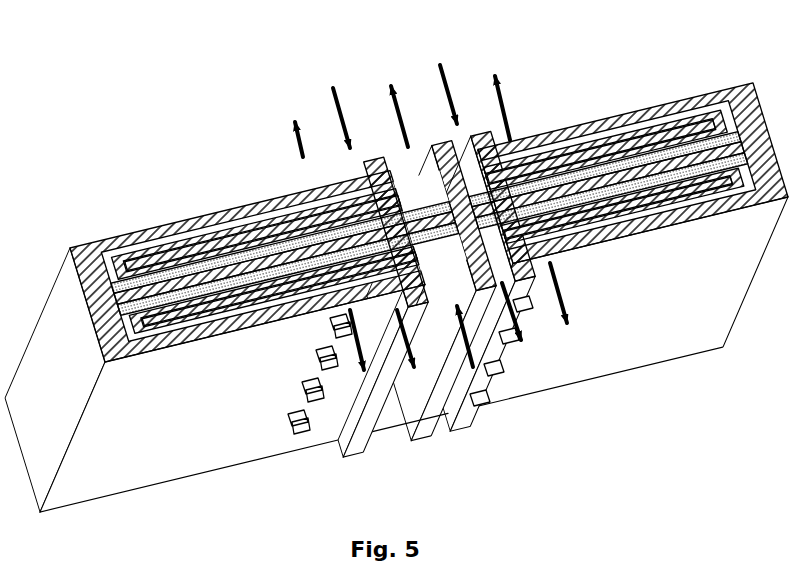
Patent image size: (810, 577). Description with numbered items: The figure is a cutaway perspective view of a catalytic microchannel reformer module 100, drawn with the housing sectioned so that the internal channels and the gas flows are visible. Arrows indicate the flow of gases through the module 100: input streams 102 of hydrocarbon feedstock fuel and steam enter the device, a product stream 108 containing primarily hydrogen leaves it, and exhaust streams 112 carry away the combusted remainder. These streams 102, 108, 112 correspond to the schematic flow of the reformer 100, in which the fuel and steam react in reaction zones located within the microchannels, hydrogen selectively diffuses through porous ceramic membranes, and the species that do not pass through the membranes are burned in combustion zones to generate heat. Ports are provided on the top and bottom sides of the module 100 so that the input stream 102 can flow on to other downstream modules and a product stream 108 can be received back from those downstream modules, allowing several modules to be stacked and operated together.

The catalytic microchannel reformer 100 is at (394, 256).
The input stream 102 is at (343, 117).
The product stream 108 is at (400, 107).
The exhaust stream 112 is at (305, 152).